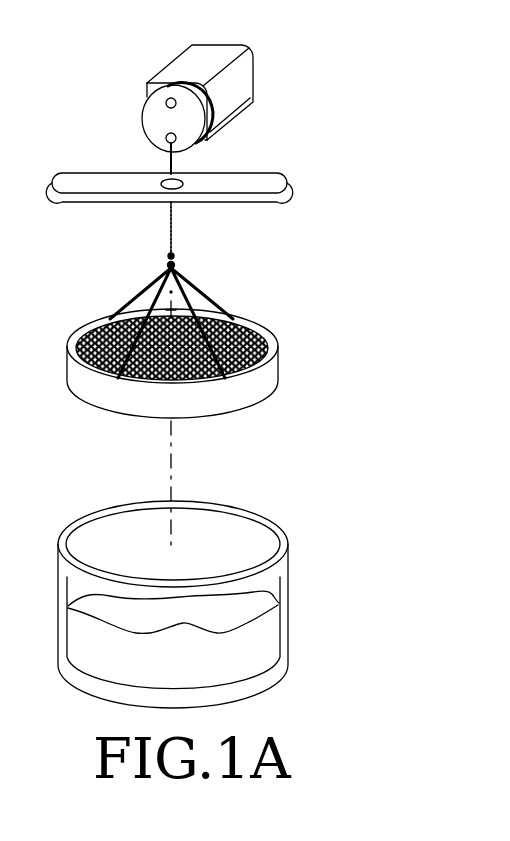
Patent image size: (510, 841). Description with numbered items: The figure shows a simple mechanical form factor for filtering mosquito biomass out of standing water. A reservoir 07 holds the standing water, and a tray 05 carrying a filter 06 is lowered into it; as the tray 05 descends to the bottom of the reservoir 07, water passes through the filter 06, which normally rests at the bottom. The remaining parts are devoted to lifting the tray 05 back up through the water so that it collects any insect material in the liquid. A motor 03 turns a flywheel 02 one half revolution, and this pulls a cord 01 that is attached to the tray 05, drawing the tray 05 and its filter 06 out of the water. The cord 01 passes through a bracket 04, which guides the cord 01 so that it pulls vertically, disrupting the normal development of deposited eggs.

The cord 01 is at (180, 174).
The flywheel 02 is at (166, 104).
The motor 03 is at (178, 72).
The bracket 04 is at (75, 174).
The tray 05 is at (272, 374).
The filter 06 is at (237, 336).
The reservoir 07 is at (272, 600).